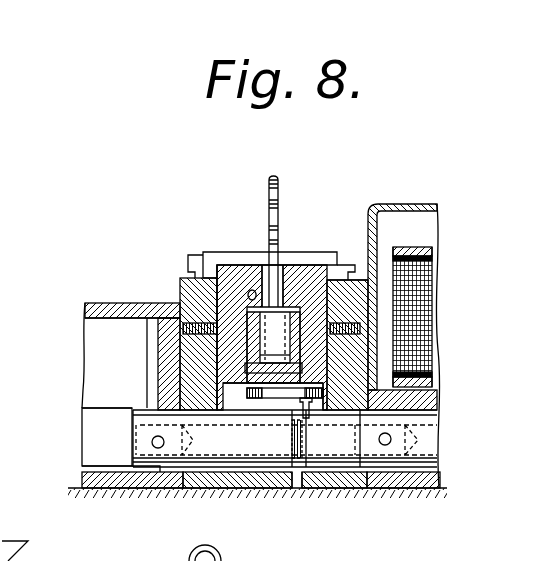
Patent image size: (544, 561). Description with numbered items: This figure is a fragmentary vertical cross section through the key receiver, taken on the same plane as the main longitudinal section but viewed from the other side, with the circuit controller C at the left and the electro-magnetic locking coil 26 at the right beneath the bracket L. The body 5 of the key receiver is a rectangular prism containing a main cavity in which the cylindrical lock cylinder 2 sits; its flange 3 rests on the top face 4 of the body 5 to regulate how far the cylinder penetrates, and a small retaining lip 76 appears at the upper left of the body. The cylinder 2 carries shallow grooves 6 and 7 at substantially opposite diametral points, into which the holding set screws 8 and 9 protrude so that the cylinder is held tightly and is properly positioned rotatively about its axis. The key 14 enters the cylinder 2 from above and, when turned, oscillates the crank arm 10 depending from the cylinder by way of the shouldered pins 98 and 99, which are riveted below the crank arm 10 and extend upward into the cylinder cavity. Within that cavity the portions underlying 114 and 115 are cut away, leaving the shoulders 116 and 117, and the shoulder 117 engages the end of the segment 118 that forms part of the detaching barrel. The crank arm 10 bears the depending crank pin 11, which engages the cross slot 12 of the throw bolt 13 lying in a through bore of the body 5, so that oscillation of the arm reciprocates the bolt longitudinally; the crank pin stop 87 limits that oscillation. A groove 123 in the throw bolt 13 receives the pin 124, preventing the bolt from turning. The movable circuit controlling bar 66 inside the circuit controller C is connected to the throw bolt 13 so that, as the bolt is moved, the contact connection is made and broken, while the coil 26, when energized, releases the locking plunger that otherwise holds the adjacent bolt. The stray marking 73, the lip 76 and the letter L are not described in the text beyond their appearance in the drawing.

The stray numeral (adjacent figure) 73 is at (15, 49).
The circuit controller C is at (115, 300).
The bracket frame L is at (424, 200).
The coil 26 is at (418, 308).
The holding set screw 8 is at (358, 316).
The shallow groove 6 is at (342, 342).
The lock cylinder 2 is at (320, 293).
The portion 114 is at (250, 263).
The retaining hook 76 is at (186, 266).
The body 5 is at (182, 290).
The shallow groove 7 is at (225, 348).
The holding set screw 9 is at (187, 328).
The shouldered pin 99 is at (203, 337).
The flange 3 is at (337, 252).
The top face 4 is at (352, 278).
The key 14 is at (268, 200).
The portion 115 is at (284, 277).
The shoulder 116 is at (254, 283).
The shoulder 117 is at (291, 340).
The shouldered pin 98 is at (278, 343).
The segment 118 is at (318, 385).
The crank pin stop 87 is at (324, 396).
The crank arm 10 is at (265, 398).
The crank pin 11 is at (302, 417).
The movable circuit controlling bar 66 is at (95, 442).
The throw bolt 13 is at (247, 460).
The pin 124 is at (302, 473).
The cross slot 12 is at (310, 467).
The groove 123 is at (340, 483).